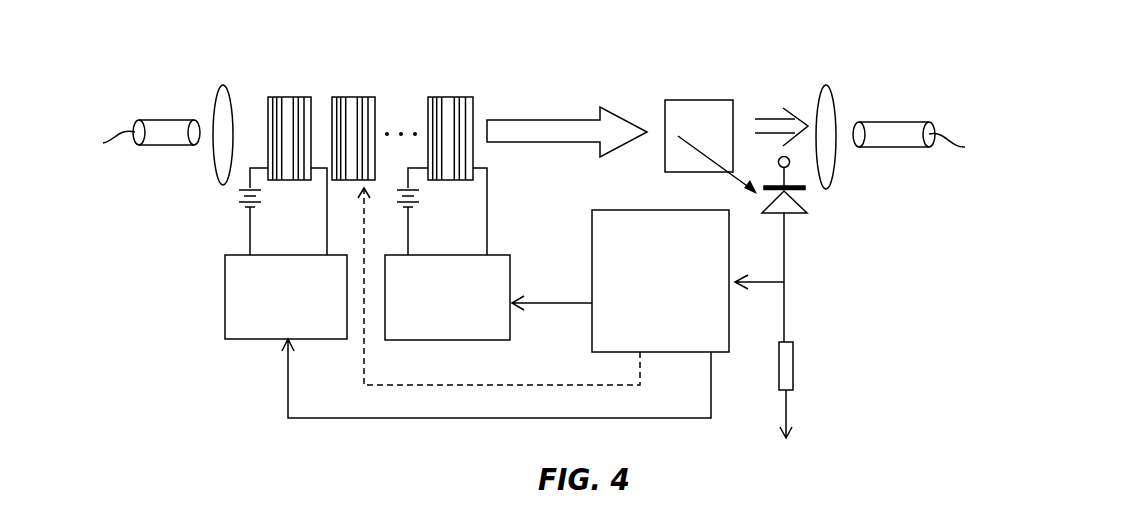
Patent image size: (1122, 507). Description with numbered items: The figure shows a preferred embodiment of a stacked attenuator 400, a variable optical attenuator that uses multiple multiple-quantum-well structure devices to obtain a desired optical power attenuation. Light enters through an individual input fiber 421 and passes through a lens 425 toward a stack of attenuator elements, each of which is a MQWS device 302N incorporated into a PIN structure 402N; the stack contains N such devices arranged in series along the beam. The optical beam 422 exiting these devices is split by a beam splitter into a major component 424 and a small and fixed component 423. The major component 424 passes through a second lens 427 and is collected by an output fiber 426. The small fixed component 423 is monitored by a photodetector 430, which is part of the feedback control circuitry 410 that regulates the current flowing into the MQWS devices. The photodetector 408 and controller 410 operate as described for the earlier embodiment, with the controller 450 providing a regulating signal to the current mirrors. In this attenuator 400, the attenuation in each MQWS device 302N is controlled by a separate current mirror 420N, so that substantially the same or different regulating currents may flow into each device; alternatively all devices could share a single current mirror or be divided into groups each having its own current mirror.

The stacked attenuator 400 is at (135, 78).
The fiber 421 is at (155, 146).
The lens 425 is at (213, 168).
The PIN structure 402N is at (465, 97).
The MQWS device 302N is at (450, 97).
The optical beam 422 is at (548, 143).
The fixed component 423 is at (748, 193).
The major component 424 is at (770, 118).
The lens 427 is at (838, 98).
The fiber 426 is at (900, 147).
The photodetector 430 is at (807, 207).
The photodetector 408 is at (874, 257).
The current mirror 420N is at (470, 341).
The controller 450 is at (620, 281).
The feedback control circuitry 410 is at (168, 296).